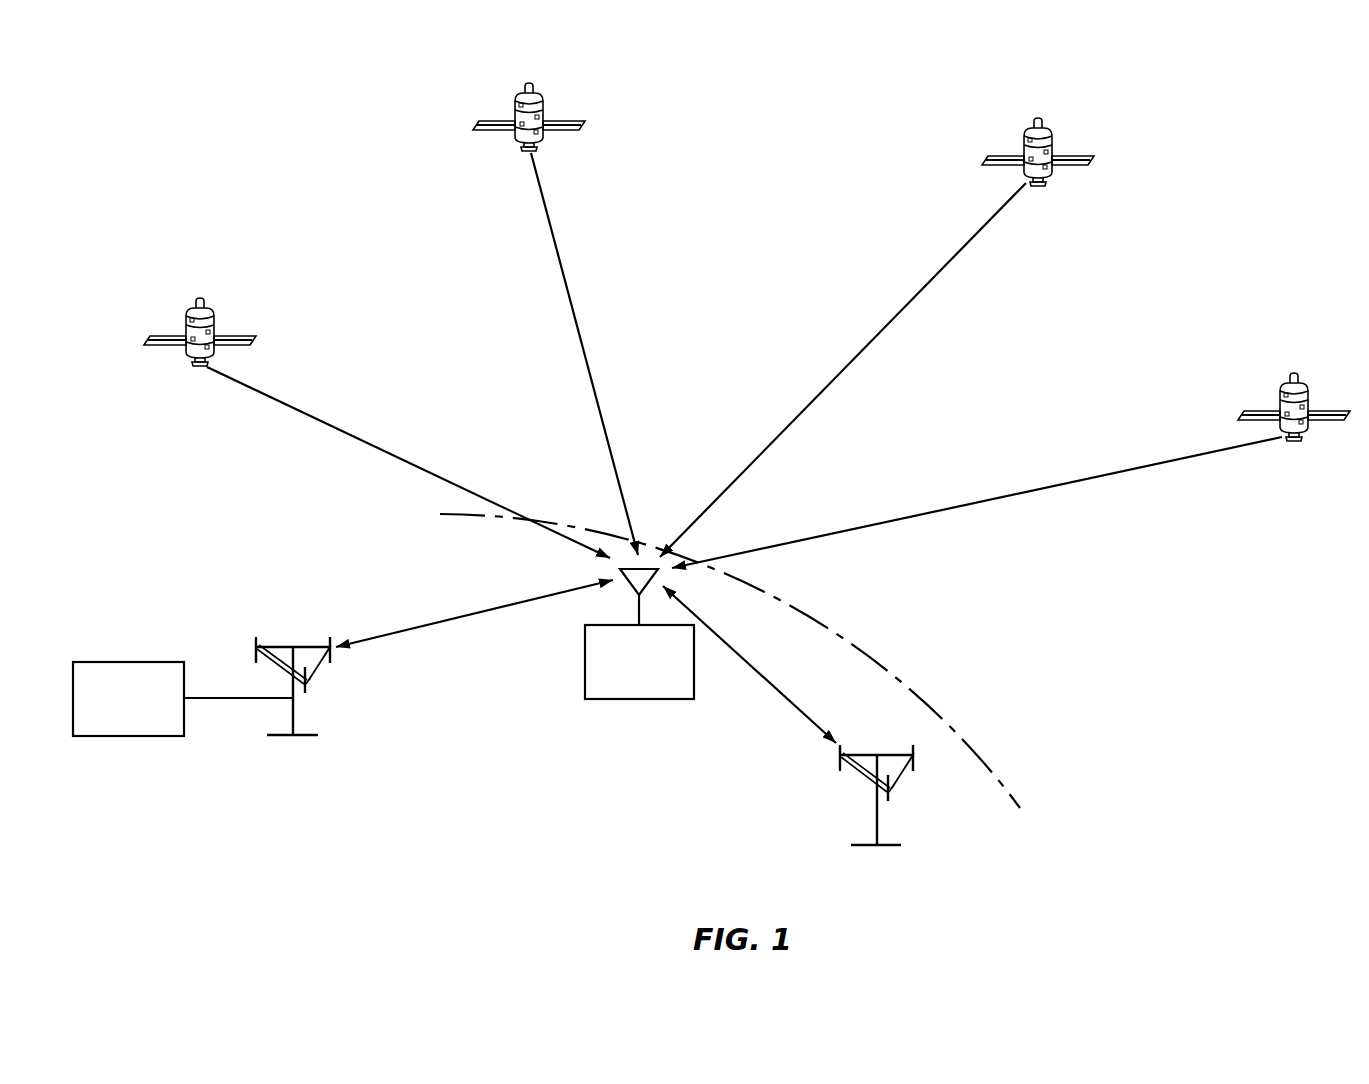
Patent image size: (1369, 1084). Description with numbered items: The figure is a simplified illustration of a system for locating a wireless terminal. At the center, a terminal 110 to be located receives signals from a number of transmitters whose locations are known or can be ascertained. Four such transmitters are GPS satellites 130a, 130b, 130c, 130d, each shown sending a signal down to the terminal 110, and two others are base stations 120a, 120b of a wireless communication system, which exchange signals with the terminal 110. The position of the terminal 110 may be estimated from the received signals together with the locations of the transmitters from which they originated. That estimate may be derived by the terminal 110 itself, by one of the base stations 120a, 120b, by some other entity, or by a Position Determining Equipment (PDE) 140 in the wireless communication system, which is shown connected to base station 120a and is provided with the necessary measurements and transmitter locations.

The terminal 110 is at (586, 668).
The base station 120a is at (288, 647).
The base station 120b is at (870, 755).
The satellite 130a is at (228, 346).
The satellite 130b is at (556, 126).
The satellite 130c is at (1066, 164).
The satellite 130d is at (1324, 419).
The Position Determining Equipment (PDE) 140 is at (123, 662).